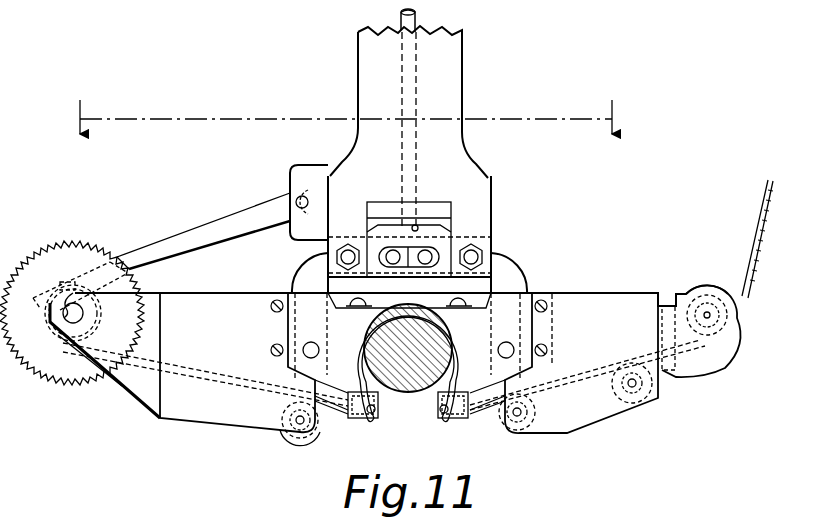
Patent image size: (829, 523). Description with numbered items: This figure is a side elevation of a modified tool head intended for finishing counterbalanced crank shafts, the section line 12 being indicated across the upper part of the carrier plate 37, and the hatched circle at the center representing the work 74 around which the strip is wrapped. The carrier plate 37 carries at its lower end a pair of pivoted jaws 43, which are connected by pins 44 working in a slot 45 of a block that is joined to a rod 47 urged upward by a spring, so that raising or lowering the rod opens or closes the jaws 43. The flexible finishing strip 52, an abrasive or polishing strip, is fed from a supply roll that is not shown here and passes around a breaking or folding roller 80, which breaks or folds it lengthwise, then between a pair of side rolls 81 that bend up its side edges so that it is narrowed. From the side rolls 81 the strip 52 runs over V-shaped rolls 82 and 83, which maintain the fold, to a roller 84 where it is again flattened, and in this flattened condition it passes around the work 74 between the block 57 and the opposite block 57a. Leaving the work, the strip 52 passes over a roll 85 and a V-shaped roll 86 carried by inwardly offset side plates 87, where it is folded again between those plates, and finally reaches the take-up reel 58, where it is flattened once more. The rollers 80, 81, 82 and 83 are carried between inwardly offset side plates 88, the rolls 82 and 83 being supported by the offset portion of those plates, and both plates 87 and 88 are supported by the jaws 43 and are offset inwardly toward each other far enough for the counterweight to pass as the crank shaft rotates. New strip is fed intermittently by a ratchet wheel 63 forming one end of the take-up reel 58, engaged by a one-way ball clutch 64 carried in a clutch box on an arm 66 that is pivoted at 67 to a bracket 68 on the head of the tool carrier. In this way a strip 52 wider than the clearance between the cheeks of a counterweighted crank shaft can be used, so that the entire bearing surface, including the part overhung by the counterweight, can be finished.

The section line 12- 12 is at (343, 117).
The carrier plate 37 is at (446, 78).
The rod 47 is at (414, 20).
The pivoted jaws 43 is at (528, 286).
The pins 44 is at (426, 264).
The slot 45 is at (402, 268).
The flexible finishing strip 52 is at (236, 406).
The block 57 is at (461, 370).
The opposite block 57a is at (355, 370).
The take-up reel 58 is at (94, 256).
The ratchet wheel 63 is at (56, 384).
The ball clutch 64 is at (76, 282).
The arm 66 is at (230, 222).
The pivot 67 is at (296, 198).
The bracket 68 is at (312, 168).
The pipe 74 is at (414, 386).
The breaking or folding roller 80 is at (710, 290).
The side rolls 81 is at (660, 332).
The V-shaped roll 82 is at (625, 404).
The V-shaped roll 83 is at (506, 430).
The roller 84 is at (440, 424).
The roll 85 is at (374, 424).
The V-shaped roll 86 is at (305, 448).
The inwardly offset side plates 87 is at (254, 362).
The inwardly offset side plates 88 is at (564, 363).